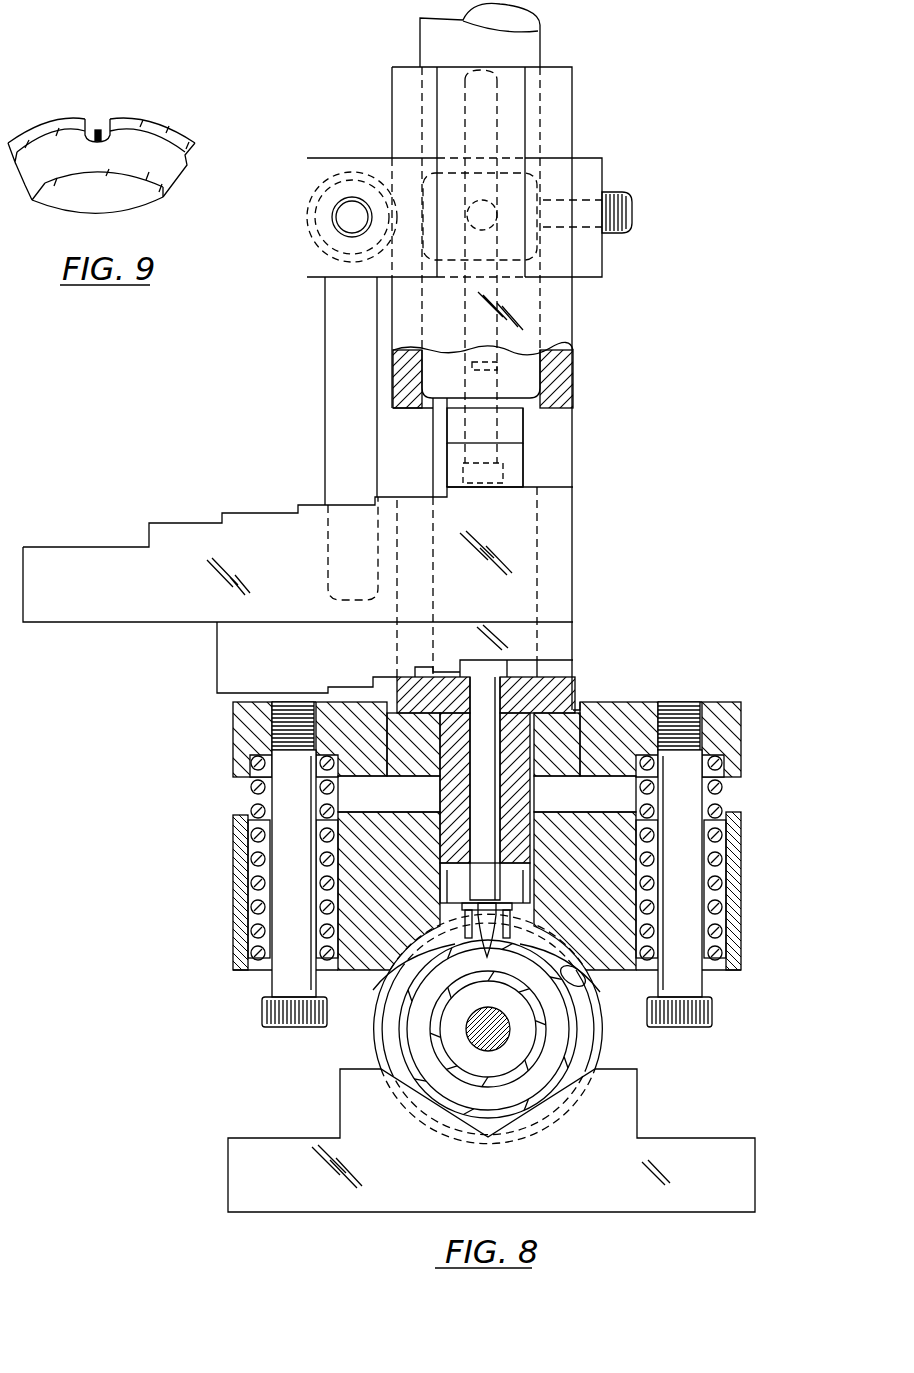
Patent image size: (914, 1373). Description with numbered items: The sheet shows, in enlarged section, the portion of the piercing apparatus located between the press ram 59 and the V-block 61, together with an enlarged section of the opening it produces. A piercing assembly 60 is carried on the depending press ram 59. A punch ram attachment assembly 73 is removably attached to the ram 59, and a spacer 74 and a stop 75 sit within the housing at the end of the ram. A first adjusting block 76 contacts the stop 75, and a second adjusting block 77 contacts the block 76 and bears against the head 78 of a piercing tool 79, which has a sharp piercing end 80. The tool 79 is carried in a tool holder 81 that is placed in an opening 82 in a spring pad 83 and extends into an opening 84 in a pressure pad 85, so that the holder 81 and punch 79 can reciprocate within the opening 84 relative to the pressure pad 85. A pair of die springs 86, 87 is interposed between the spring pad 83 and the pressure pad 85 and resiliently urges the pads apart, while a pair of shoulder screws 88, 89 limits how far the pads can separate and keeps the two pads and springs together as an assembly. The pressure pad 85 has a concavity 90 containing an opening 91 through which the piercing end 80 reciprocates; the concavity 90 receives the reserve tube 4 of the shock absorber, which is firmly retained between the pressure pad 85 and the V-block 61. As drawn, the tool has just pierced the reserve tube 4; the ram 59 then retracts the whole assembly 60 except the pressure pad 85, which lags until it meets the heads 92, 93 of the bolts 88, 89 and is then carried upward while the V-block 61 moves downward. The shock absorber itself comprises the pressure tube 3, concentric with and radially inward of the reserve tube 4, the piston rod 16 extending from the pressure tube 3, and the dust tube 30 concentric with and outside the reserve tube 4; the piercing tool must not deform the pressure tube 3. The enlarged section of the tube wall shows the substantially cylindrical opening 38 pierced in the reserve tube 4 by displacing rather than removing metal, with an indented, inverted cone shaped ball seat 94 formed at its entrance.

In FIG. 9, the pressure tube 3 is at (157, 185).
In FIG. 8, the pressure tube 3 is at (543, 1032).
In FIG. 9, the reserve tube 4 is at (167, 130).
In FIG. 8, the reserve tube 4 is at (402, 1032).
In FIG. 8, the piston rod 16 is at (478, 1043).
In FIG. 8, the dust tube 30 is at (598, 1047).
In FIG. 9, the opening 38 is at (103, 132).
In FIG. 8, the press ram 59 is at (527, 44).
In FIG. 8, the piercing assembly 60 is at (598, 514).
In FIG. 8, the V-block 61 is at (747, 1155).
In FIG. 8, the punch ram attachment assembly 73 is at (562, 120).
In FIG. 8, the spacer 74 is at (517, 420).
In FIG. 8, the stop 75 is at (512, 473).
In FIG. 8, the first adjusting block 76 is at (568, 550).
In FIG. 8, the second adjusting block 77 is at (568, 625).
In FIG. 8, the head 78 is at (498, 665).
In FIG. 8, the piercing tool 79 is at (488, 700).
In FIG. 8, the piercing end 80 is at (403, 980).
In FIG. 8, the tool holder 81 is at (565, 727).
In FIG. 8, the opening 82 is at (440, 783).
In FIG. 8, the spring pad 83 is at (728, 723).
In FIG. 8, the opening 84 is at (525, 812).
In FIG. 8, the pressure pad 85 is at (738, 885).
In FIG. 8, the die spring 86 is at (710, 928).
In FIG. 8, the die spring 87 is at (250, 855).
In FIG. 8, the shoulder screw 88 is at (277, 985).
In FIG. 8, the shoulder screw 89 is at (690, 982).
In FIG. 8, the concavity 90 is at (560, 983).
In FIG. 8, the opening 91 is at (500, 925).
In FIG. 8, the head 92 is at (270, 1013).
In FIG. 8, the head 93 is at (717, 1005).
In FIG. 9, the ball seat 94 is at (95, 118).